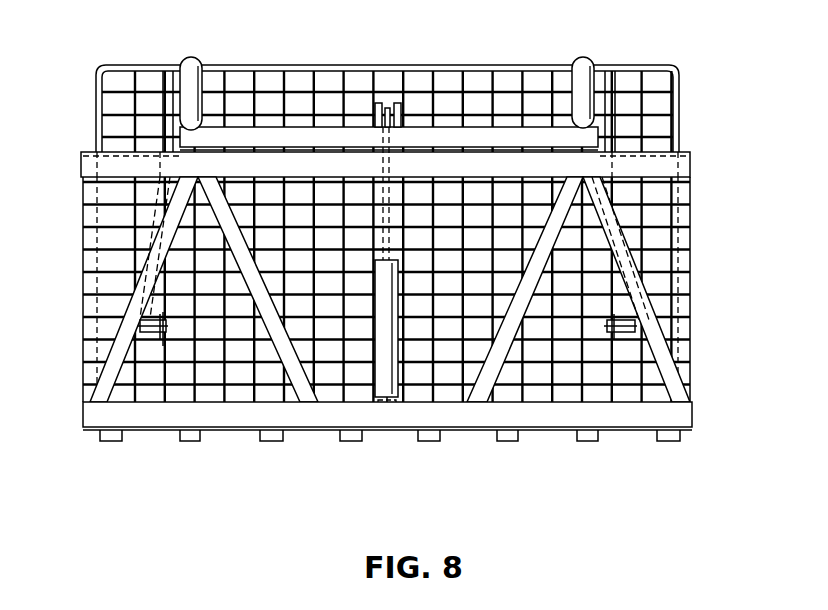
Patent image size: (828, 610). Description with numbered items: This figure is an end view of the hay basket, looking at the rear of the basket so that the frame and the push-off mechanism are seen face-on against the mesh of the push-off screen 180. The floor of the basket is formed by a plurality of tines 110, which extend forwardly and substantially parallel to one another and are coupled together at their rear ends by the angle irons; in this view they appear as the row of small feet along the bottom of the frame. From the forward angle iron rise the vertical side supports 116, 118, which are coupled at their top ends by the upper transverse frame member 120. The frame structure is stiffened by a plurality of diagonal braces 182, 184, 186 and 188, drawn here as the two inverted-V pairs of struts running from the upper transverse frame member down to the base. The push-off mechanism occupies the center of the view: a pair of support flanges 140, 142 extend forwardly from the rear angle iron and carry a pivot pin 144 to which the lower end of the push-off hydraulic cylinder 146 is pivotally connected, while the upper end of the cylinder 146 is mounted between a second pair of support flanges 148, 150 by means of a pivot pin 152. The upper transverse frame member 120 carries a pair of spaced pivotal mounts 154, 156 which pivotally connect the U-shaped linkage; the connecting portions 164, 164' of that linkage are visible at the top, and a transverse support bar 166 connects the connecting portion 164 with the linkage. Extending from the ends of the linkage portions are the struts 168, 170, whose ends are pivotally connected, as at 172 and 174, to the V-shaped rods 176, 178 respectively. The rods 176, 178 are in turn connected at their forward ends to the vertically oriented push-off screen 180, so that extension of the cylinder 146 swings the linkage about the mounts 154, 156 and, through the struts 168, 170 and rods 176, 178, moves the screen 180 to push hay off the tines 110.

The tines 110 is at (258, 437).
The vertical side support 116 is at (83, 196).
The vertical side support 118 is at (690, 200).
The upper transverse frame member 120 is at (690, 152).
The support flange 140 is at (387, 412).
The support flange 142 is at (398, 412).
The pivot pin 144 is at (378, 412).
The push-off hydraulic cylinder 146 is at (388, 370).
The support flange 148 is at (376, 104).
The support flange 150 is at (388, 108).
The pivot pin 152 is at (400, 104).
The pivotal mount 154 is at (598, 160).
The pivotal mount 156 is at (182, 163).
The connecting portion 164 is at (567, 74).
The connecting portion 164' is at (206, 67).
The transverse support bar 166 is at (258, 140).
The strut 168 is at (147, 307).
The strut 170 is at (627, 298).
The pivotal connection 172 is at (145, 352).
The pivotal connection 174 is at (660, 360).
The V-shaped rod 176 is at (168, 342).
The V-shaped rod 178 is at (606, 336).
The push-off screen 180 is at (675, 70).
The diagonal brace 182 is at (160, 262).
The diagonal brace 184 is at (302, 385).
The diagonal brace 186 is at (478, 385).
The diagonal brace 188 is at (652, 338).